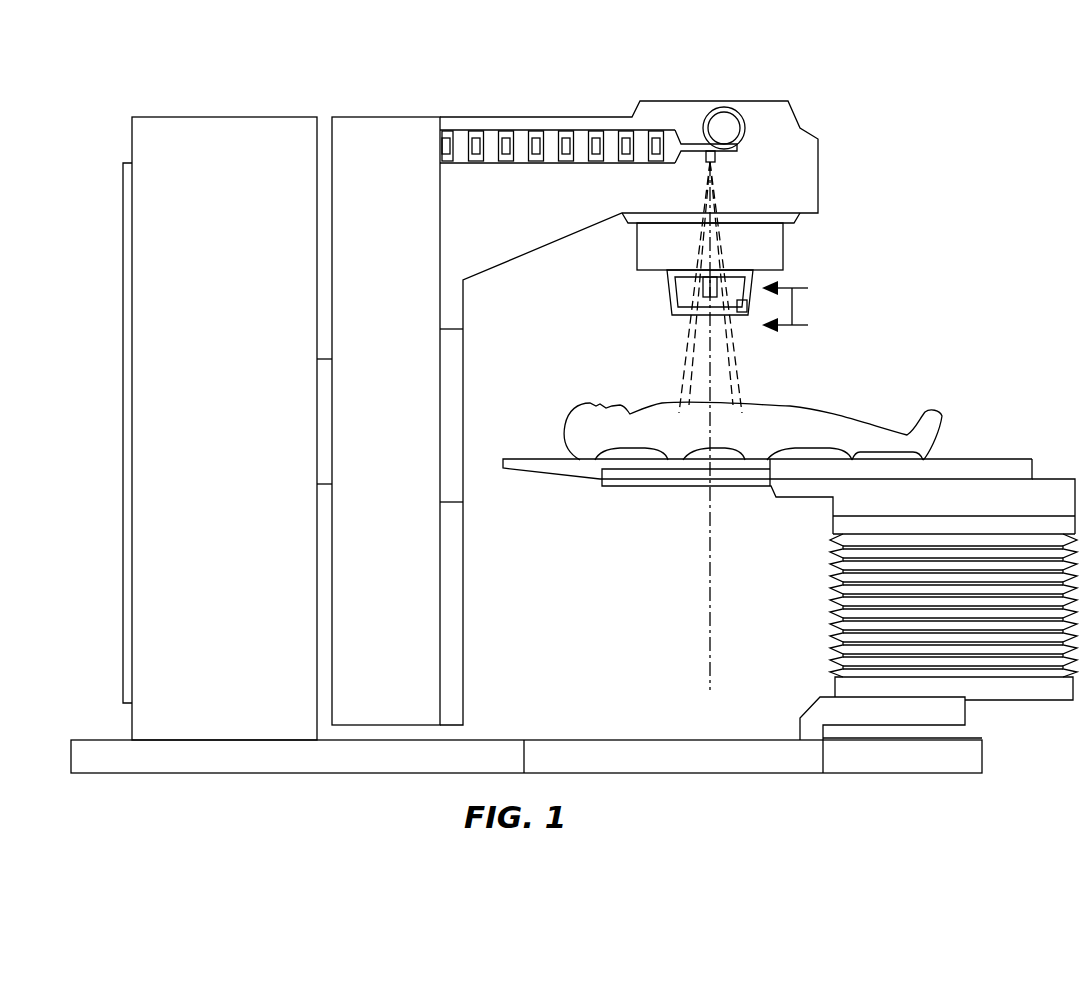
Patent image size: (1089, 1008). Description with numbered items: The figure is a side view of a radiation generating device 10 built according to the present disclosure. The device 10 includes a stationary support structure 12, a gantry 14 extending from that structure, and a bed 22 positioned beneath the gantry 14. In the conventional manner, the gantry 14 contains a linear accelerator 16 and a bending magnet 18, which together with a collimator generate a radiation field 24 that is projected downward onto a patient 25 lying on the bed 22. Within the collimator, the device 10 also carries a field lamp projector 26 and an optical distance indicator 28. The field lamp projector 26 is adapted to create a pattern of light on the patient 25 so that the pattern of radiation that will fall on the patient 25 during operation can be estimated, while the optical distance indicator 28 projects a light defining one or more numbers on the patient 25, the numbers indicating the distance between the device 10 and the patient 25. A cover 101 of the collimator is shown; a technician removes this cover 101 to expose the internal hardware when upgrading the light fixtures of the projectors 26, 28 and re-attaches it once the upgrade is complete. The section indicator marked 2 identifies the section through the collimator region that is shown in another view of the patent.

The radiation generating device 10 is at (912, 96).
The stationary support structure 12 is at (238, 419).
The gantry 14 is at (392, 137).
The linear accelerator 16 is at (548, 132).
The bending magnet 18 is at (728, 107).
The cover 101 is at (772, 245).
The field lamp projector 26 is at (702, 282).
The optical distance indicator 28 is at (746, 313).
The section line 2- 2 is at (794, 308).
The radiation field 24 is at (685, 351).
The patient 25 is at (790, 425).
The bed 22 is at (1005, 460).